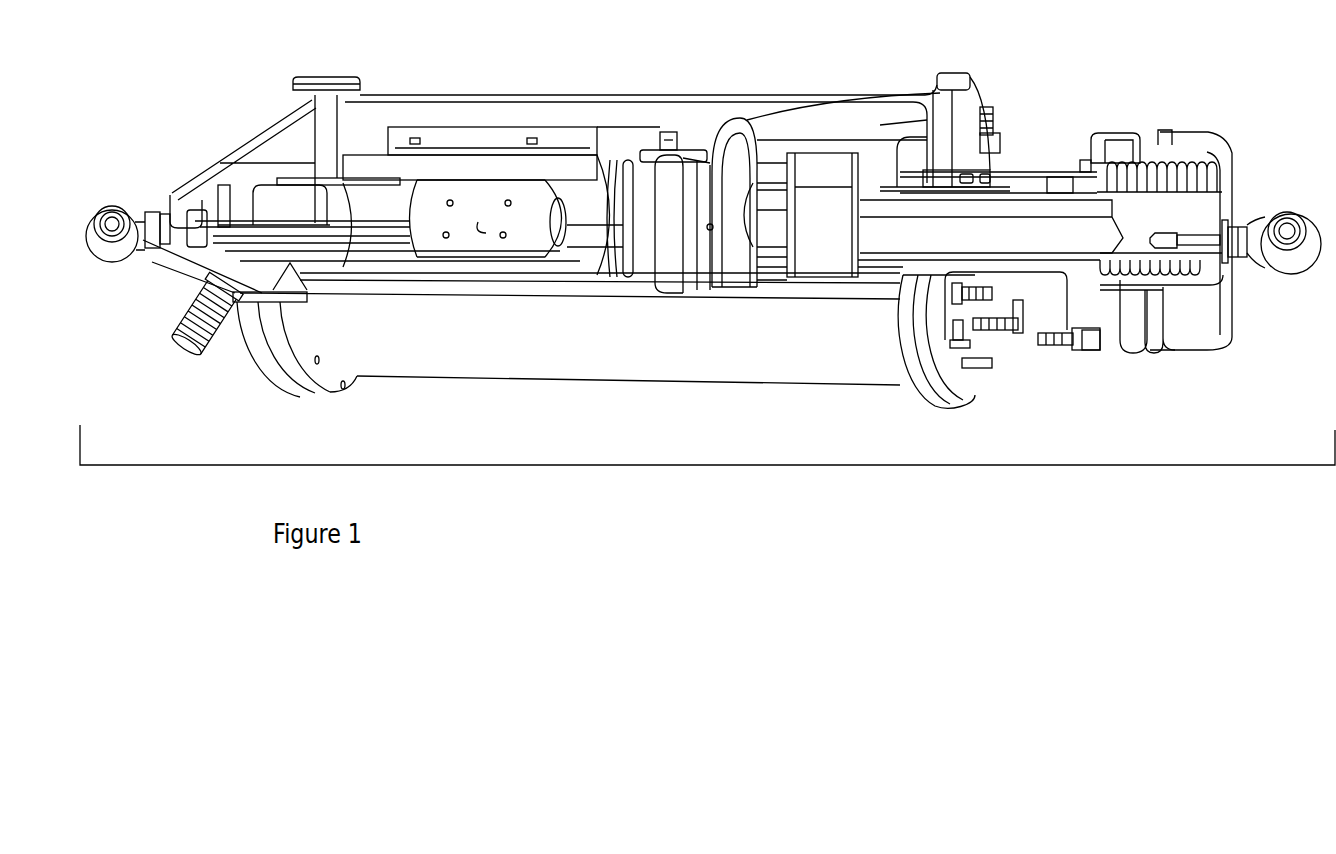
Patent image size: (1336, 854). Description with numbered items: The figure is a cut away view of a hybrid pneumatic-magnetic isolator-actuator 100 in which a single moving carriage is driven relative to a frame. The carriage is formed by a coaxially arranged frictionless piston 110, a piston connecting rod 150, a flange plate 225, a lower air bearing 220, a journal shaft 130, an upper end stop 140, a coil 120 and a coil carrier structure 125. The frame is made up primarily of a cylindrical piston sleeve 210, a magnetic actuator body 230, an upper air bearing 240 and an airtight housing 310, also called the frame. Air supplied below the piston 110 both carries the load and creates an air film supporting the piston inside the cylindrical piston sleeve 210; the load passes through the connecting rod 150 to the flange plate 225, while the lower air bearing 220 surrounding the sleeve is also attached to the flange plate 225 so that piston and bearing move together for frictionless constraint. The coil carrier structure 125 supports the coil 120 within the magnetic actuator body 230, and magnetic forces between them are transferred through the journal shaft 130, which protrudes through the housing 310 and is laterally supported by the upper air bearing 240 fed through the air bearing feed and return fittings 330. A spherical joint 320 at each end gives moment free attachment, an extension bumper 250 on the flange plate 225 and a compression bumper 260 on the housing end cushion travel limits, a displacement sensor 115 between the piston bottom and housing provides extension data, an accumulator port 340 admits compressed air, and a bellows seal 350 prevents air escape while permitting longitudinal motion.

The hybrid pneumatic-magnetic isolator-actuator 100 is at (853, 465).
The frictionless piston 110 is at (488, 237).
The displacement sensor 115 is at (353, 248).
The coil 120 is at (827, 187).
The coil carrier structure 125 is at (795, 150).
The journal shaft 130 is at (1023, 200).
The upper end stop 140 is at (1235, 175).
The piston connecting rod 150 is at (585, 255).
The cylindrical piston sleeve 210 is at (393, 167).
The lower air bearing 220 is at (500, 150).
The flange plate 225 is at (678, 132).
The magnetic actuator body 230 is at (935, 112).
The upper air bearing 240 is at (1003, 187).
The extension bumper 250 is at (672, 270).
The compression bumper 260 is at (1130, 123).
The airtight housing 310 is at (393, 88).
The spherical joint 320 is at (101, 205).
The air bearing feed and return fittings 330 is at (1022, 340).
The accumulator port 340 is at (198, 362).
The bellows seal 350 is at (1182, 157).